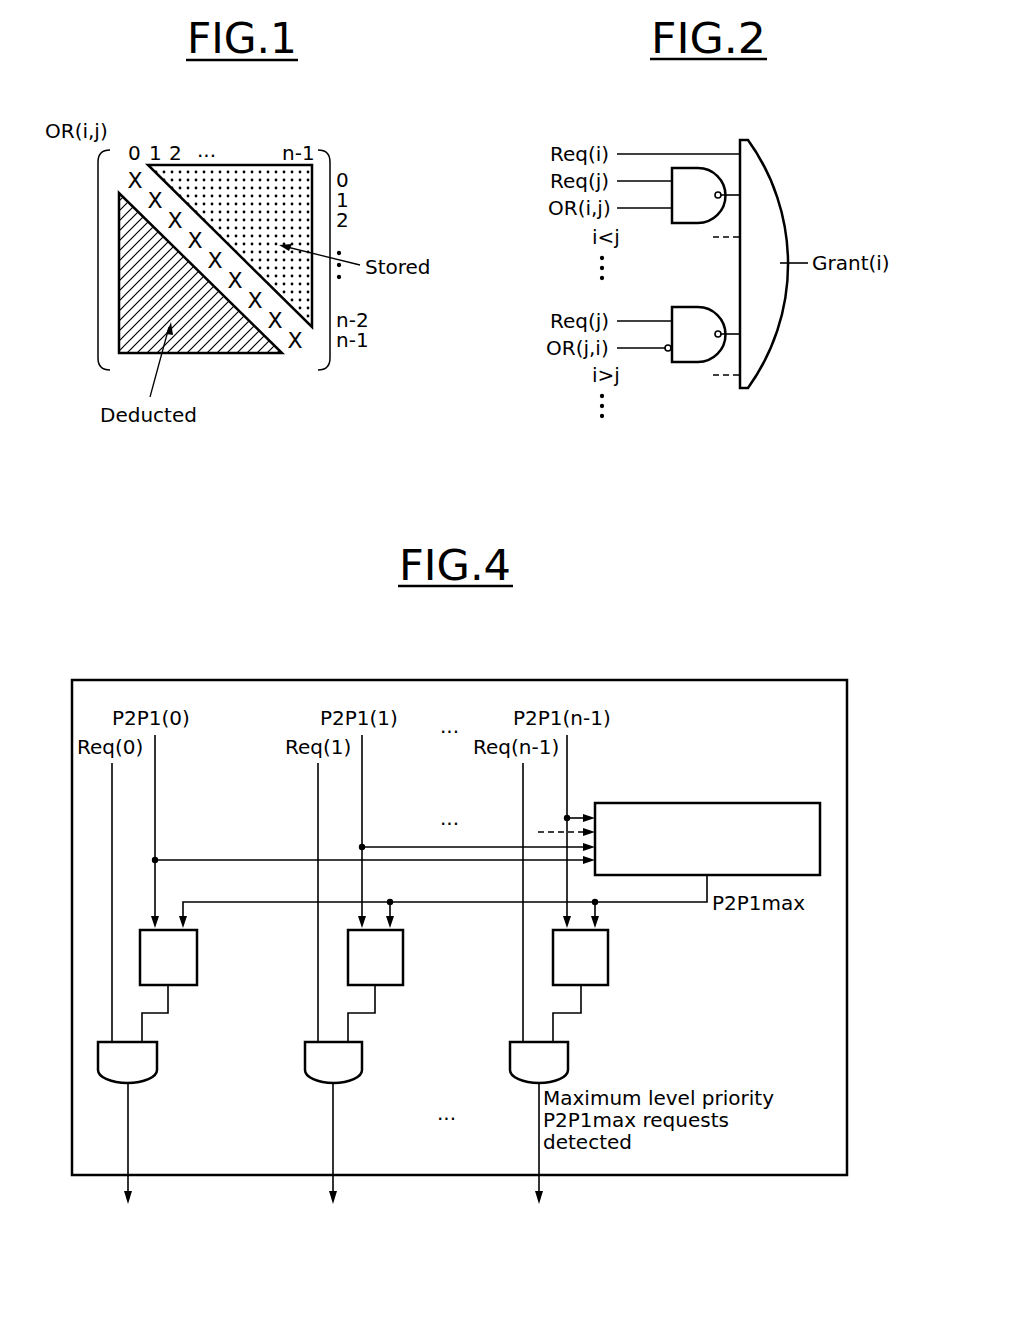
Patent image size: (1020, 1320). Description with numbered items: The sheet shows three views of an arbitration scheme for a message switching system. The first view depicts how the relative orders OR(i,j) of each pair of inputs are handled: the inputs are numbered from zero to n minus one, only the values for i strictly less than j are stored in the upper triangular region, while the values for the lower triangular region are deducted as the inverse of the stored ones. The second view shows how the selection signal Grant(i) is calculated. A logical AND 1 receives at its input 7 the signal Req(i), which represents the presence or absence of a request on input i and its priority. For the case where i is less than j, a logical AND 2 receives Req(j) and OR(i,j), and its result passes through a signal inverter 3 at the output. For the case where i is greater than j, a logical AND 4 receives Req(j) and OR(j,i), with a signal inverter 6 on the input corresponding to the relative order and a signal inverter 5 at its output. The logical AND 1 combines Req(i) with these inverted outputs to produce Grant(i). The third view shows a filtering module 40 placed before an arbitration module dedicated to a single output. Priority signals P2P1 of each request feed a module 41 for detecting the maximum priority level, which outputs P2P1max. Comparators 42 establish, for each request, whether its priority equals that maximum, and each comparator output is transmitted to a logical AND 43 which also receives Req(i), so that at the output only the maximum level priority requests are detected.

In FIG. 2, the logical AND 1 is at (773, 183).
In FIG. 2, the logical AND 2 is at (688, 168).
In FIG. 2, the signal inverter 3 is at (717, 191).
In FIG. 2, the logical AND 4 is at (688, 307).
In FIG. 2, the signal inverter 5 is at (717, 331).
In FIG. 2, the signal inverter 6 is at (668, 352).
In FIG. 2, the input 7 is at (647, 152).
In FIG. 4, the filtering module 40 is at (460, 678).
In FIG. 4, the module for detecting the maximum priority level 41 is at (707, 803).
In FIG. 4, the comparator 42 is at (199, 957).
In FIG. 4, the logical AND 43 is at (159, 1053).